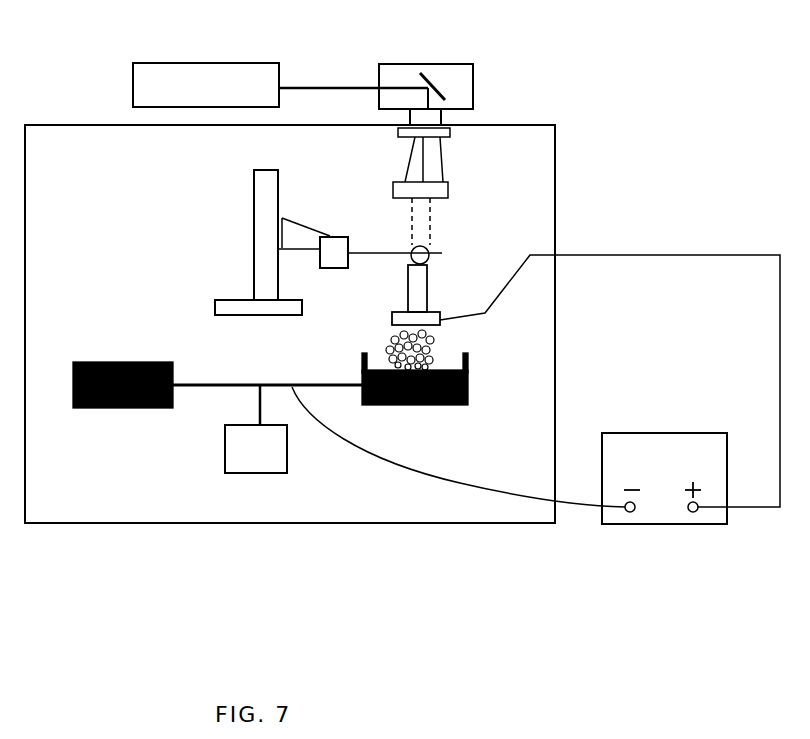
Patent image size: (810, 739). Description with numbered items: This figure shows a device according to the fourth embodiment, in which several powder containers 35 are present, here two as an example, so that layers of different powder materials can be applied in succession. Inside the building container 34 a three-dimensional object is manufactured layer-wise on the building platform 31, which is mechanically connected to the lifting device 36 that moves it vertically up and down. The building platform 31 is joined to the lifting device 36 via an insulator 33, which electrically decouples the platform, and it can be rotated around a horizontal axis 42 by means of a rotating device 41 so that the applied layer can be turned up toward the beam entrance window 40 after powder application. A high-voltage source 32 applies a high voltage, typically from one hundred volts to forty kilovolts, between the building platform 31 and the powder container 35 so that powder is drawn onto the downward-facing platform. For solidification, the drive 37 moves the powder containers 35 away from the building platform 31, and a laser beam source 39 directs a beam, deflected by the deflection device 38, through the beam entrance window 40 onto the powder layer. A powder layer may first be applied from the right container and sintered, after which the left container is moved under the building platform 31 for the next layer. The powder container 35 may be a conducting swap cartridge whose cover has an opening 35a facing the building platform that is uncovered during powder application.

The building platform 31 is at (566, 381).
The high-voltage source 32 is at (509, 455).
The insulator 33 is at (403, 288).
The building container 34 is at (93, 523).
The powder container 35 is at (291, 388).
The opening 35a is at (458, 345).
The lifting device 36 is at (254, 205).
The drive 37 is at (256, 429).
The deflection device 38 is at (437, 63).
The laser beam source 39 is at (280, 85).
The beam entrance window 40 is at (455, 137).
The rotating device 41 is at (338, 237).
The horizontal axis 42 is at (452, 253).